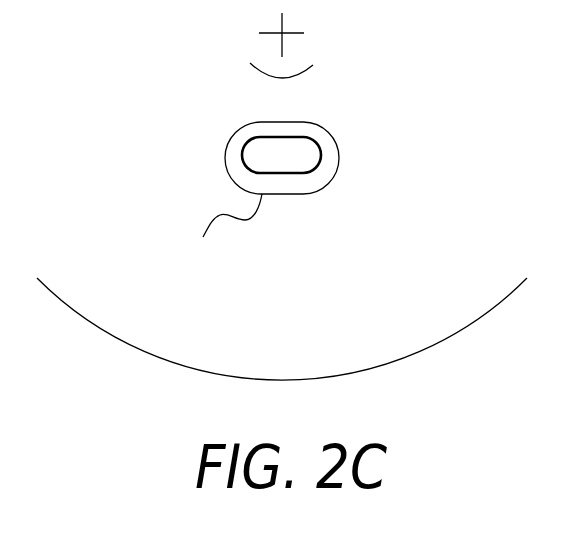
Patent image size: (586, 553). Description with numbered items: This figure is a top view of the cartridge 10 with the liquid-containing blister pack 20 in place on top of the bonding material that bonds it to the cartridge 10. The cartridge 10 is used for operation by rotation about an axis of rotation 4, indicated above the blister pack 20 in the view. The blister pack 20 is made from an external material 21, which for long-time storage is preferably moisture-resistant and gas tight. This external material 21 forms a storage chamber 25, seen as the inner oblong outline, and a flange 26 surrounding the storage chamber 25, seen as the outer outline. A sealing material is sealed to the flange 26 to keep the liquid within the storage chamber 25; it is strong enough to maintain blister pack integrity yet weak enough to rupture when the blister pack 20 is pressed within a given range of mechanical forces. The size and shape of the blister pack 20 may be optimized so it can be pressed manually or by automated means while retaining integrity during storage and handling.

The axis of rotation 4 is at (280, 37).
The cartridge 10 is at (303, 345).
The blister pack 20 is at (294, 158).
The external material 21 is at (220, 239).
The storage chamber 25 is at (285, 161).
The flange 26 is at (237, 162).